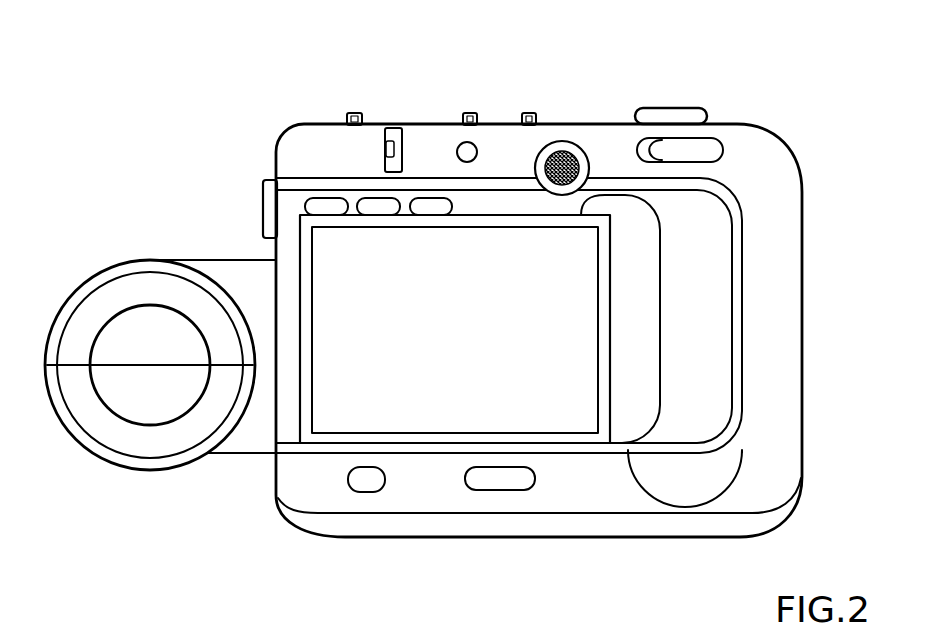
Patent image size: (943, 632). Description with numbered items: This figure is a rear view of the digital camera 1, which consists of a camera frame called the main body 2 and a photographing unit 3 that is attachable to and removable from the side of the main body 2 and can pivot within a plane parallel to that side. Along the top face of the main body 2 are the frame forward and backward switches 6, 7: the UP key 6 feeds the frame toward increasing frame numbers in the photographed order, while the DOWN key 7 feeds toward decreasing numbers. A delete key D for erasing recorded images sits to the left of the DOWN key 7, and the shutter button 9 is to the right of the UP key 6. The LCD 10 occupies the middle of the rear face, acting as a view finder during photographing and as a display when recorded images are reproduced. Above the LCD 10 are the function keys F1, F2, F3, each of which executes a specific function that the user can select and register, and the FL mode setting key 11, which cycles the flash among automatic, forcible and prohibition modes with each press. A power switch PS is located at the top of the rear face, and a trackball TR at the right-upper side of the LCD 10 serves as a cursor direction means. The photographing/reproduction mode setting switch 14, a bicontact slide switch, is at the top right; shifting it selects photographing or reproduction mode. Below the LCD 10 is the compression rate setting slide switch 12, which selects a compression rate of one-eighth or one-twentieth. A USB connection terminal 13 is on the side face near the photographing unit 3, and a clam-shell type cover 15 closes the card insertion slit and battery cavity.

The digital camera 1 is at (417, 92).
The main body 2 is at (590, 115).
The photographing unit 3 is at (133, 258).
The frame forward switch 6 is at (528, 113).
The frame backward switch 7 is at (470, 113).
The shutter button 9 is at (672, 108).
The LCD 10 is at (455, 329).
The FL mode setting key 11 is at (385, 150).
The compression rate setting slide switch 12 is at (348, 476).
The USB connection terminal 13 is at (263, 210).
The photographing/reproduction mode setting switch 14 is at (658, 163).
The clam-shell type cover 15 is at (648, 527).
The delete key D is at (353, 113).
The function key F1 is at (333, 208).
The function key F2 is at (383, 208).
The function key F3 is at (433, 208).
The power switch PS is at (461, 162).
The trackball TR is at (533, 172).